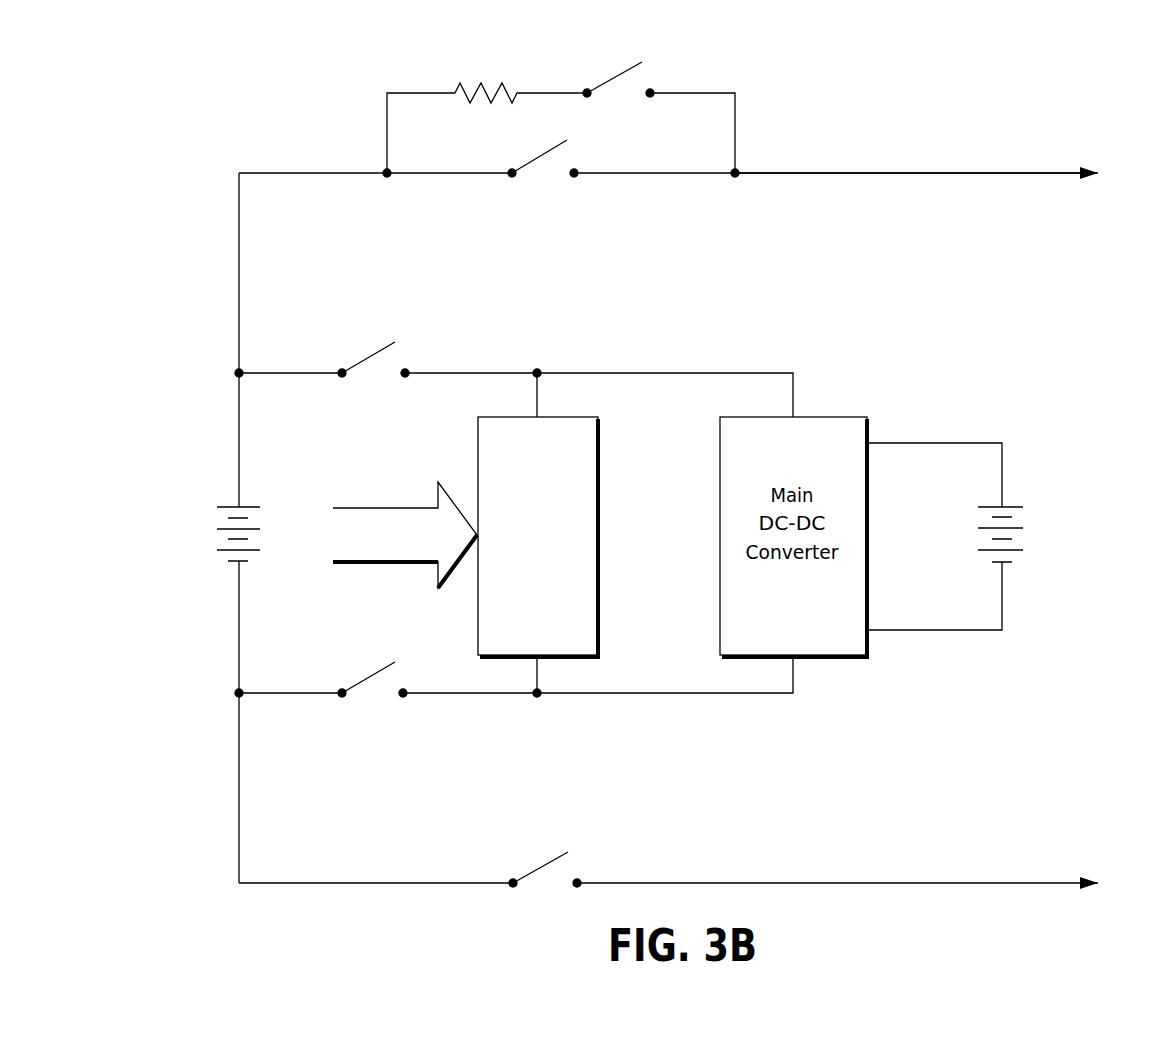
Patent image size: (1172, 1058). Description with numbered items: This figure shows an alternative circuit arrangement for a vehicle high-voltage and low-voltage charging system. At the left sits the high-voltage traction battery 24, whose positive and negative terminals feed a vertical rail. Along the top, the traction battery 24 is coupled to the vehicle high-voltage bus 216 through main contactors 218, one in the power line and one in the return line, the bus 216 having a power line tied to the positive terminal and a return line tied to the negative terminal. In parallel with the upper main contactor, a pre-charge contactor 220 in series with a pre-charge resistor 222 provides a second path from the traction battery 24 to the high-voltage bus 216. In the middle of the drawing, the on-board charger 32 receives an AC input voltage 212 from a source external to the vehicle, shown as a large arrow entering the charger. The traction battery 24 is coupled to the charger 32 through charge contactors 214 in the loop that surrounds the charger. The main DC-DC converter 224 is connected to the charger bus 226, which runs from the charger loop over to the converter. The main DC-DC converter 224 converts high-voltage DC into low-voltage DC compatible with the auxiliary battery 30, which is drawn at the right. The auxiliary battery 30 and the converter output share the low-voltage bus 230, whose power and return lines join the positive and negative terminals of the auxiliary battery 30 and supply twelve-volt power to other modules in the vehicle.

The high-voltage traction battery 24 is at (190, 542).
The auxiliary battery 30 is at (1050, 544).
The on-board charger 32 is at (602, 542).
The AC input voltage 212 is at (410, 508).
The charge contactors 214 is at (368, 677).
The vehicle high-voltage bus 216 is at (838, 173).
The main contactors 218 is at (538, 158).
The pre-charge contactor 220 is at (618, 73).
The pre-charge resistor 222 is at (480, 83).
The main DC-DC converter 224 is at (867, 543).
The charger bus 226 is at (655, 373).
The low-voltage bus 230 is at (900, 630).